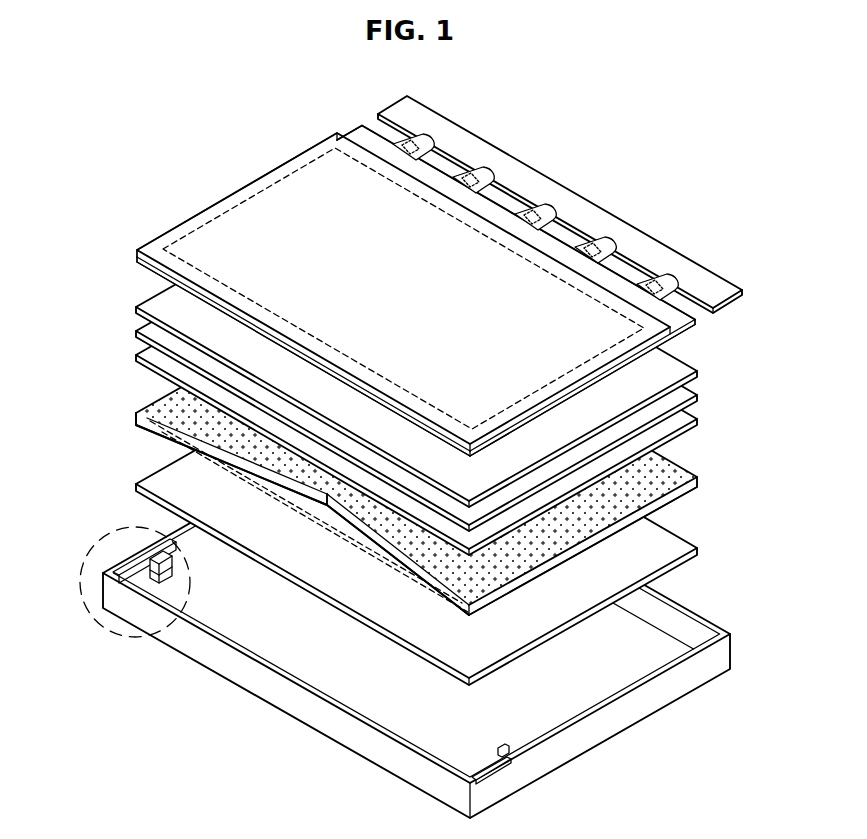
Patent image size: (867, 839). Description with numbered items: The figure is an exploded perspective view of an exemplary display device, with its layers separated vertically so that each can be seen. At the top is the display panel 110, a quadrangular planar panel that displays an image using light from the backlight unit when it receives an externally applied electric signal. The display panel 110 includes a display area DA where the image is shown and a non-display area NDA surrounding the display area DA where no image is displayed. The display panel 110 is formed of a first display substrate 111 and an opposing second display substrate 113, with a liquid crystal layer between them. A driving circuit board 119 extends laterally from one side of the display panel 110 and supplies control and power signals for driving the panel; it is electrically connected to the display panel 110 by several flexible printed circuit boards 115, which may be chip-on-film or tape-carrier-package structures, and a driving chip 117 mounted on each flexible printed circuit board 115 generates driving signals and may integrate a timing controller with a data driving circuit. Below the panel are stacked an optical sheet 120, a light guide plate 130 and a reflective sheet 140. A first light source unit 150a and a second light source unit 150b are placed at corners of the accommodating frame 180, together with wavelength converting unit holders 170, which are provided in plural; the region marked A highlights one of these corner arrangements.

The display panel 110 is at (357, 282).
The first display substrate 111 is at (158, 272).
The second display substrate 113 is at (163, 237).
The flexible printed circuit board 115 is at (543, 217).
The driving chip 117 is at (655, 283).
The driving circuit board 119 is at (702, 278).
The optical sheet 120 is at (707, 365).
The light guide plate 130 is at (677, 467).
The reflective sheet 140 is at (690, 542).
The first light source unit 150a is at (140, 560).
The second light source unit 150b is at (506, 746).
The wavelength converting unit holder 170 is at (103, 598).
The accommodating frame 180 is at (722, 657).
The display area DA is at (255, 212).
The non-display area NDA is at (278, 173).
The detail region A is at (108, 532).